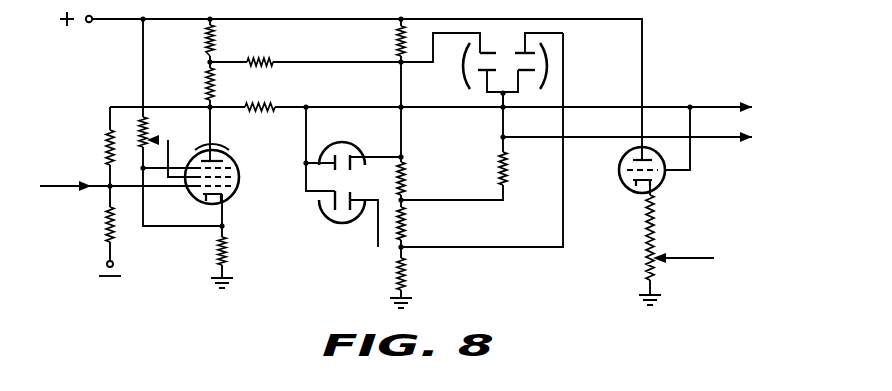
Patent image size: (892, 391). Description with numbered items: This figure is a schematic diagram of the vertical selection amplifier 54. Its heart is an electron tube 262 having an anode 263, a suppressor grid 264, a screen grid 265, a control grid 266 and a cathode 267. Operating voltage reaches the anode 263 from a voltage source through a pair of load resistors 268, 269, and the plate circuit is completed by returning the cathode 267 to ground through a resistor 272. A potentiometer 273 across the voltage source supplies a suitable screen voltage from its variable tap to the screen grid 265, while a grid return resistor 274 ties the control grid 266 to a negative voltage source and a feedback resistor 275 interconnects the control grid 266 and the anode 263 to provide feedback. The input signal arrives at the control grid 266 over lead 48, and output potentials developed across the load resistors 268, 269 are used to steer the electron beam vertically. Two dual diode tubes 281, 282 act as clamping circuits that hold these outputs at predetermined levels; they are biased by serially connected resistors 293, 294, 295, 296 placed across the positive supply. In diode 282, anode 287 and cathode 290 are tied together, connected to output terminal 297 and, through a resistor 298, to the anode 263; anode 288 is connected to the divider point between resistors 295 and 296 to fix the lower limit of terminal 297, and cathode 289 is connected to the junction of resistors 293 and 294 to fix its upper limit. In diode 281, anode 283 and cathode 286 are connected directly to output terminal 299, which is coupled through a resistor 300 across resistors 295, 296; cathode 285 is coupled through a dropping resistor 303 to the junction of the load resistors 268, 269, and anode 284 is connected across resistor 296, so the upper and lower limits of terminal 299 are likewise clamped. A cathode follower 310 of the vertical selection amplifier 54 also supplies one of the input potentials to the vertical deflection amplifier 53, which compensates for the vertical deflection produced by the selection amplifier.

The lead 48 is at (72, 170).
The vertical deflection amplifier 53 is at (724, 237).
The vertical selection amplifier 54 is at (276, 134).
The electron tube 262 is at (201, 154).
The anode 263 is at (224, 161).
The suppressor grid 264 is at (231, 169).
The screen grid 265 is at (232, 177).
The control grid 266 is at (231, 187).
The cathode 267 is at (203, 203).
The load resistor 268 is at (214, 42).
The load resistor 269 is at (214, 86).
The resistor 272 is at (226, 252).
The potentiometer 273 is at (140, 125).
The grid return resistor 274 is at (106, 229).
The feedback resistor 275 is at (106, 146).
The dual diode tube 281 is at (461, 76).
The dual diode tube 282 is at (323, 213).
The anode 283 is at (482, 76).
The anode 284 is at (521, 50).
The cathode 285 is at (480, 50).
The cathode 286 is at (538, 80).
The anode 287 is at (350, 124).
The anode 288 is at (366, 226).
The cathode 289 is at (359, 152).
The cathode 290 is at (330, 226).
The resistor 293 is at (397, 37).
The resistor 294 is at (407, 178).
The resistor 295 is at (407, 229).
The resistor 296 is at (407, 286).
The output terminal 297 is at (702, 106).
The resistor 298 is at (278, 104).
The output terminal 299 is at (664, 142).
The resistor 300 is at (508, 172).
The dropping resistor 303 is at (268, 58).
The cathode follower 310 is at (613, 165).